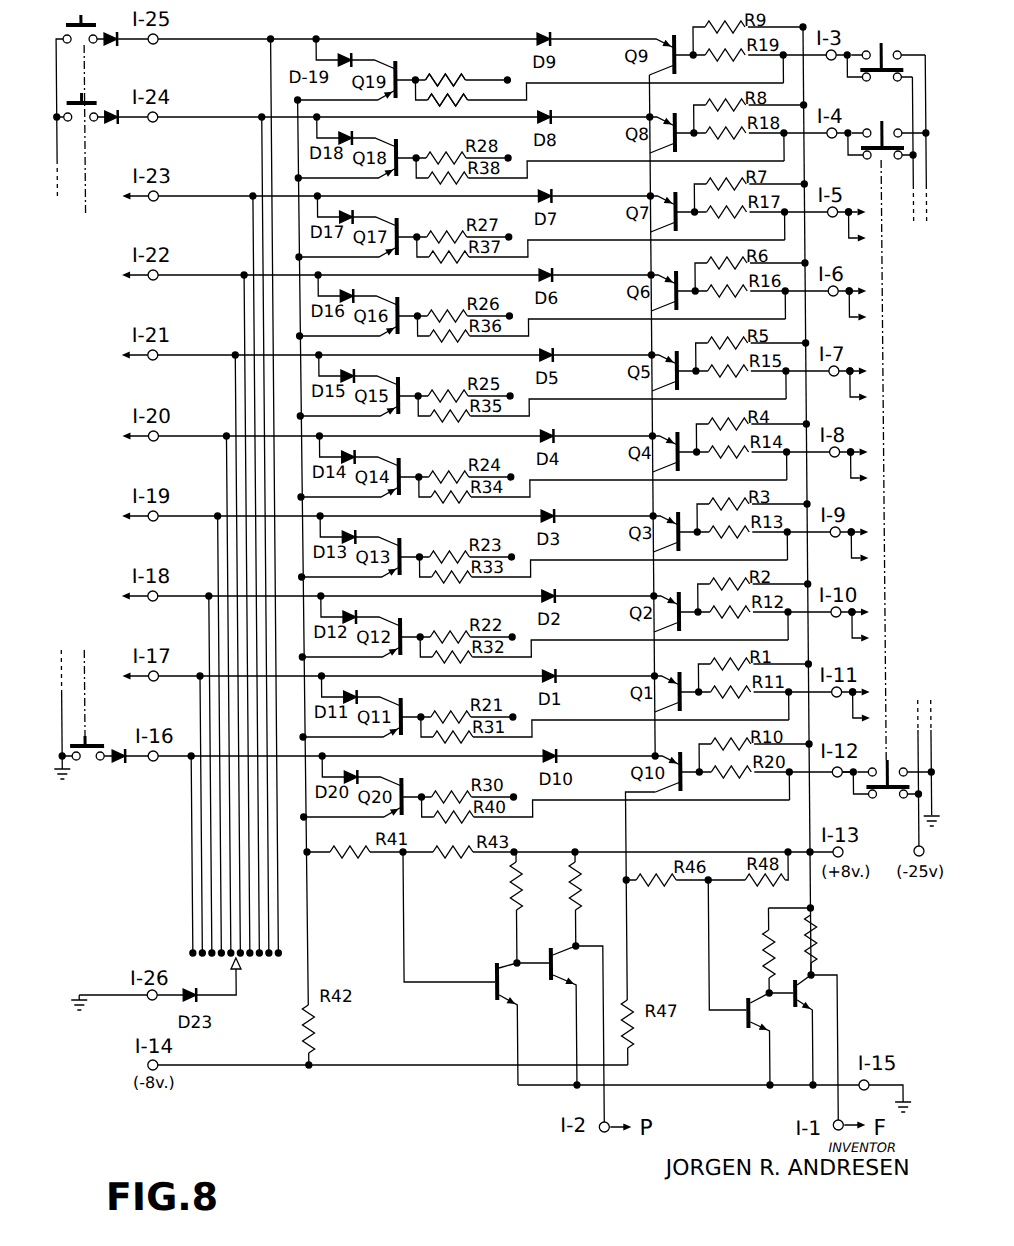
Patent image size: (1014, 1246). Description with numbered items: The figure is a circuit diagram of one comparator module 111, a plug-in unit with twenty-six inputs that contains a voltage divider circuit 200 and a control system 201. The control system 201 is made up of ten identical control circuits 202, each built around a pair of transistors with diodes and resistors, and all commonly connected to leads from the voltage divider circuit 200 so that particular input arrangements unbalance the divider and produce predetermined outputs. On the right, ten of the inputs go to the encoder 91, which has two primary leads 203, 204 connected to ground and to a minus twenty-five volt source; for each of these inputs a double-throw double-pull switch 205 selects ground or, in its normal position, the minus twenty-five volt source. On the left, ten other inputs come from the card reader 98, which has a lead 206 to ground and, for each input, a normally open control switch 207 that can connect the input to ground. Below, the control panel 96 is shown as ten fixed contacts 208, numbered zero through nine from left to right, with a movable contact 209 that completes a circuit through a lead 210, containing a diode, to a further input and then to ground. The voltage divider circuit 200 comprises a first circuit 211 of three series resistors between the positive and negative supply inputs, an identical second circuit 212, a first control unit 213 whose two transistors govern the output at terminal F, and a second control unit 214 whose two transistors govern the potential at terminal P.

The control system 201 is at (362, 32).
The control circuit 202 is at (440, 55).
The encoder 91 is at (912, 42).
The control switch 207 is at (98, 734).
The card reader 98 is at (96, 786).
The lead 206 is at (66, 768).
The control panel 96 is at (189, 953).
The fixed contacts 208 is at (257, 960).
The movable contact 209 is at (241, 972).
The lead 210 is at (224, 1002).
The first circuit 211 is at (311, 918).
The second circuit 212 is at (628, 942).
The first control unit 213 is at (840, 962).
The second control unit 214 is at (496, 1017).
The voltage divider circuit 200 is at (479, 1078).
The comparator module 111 is at (373, 1092).
The double-throw double-pull switch 205 is at (843, 783).
The primary lead 203 is at (917, 807).
The primary lead 204 is at (915, 832).